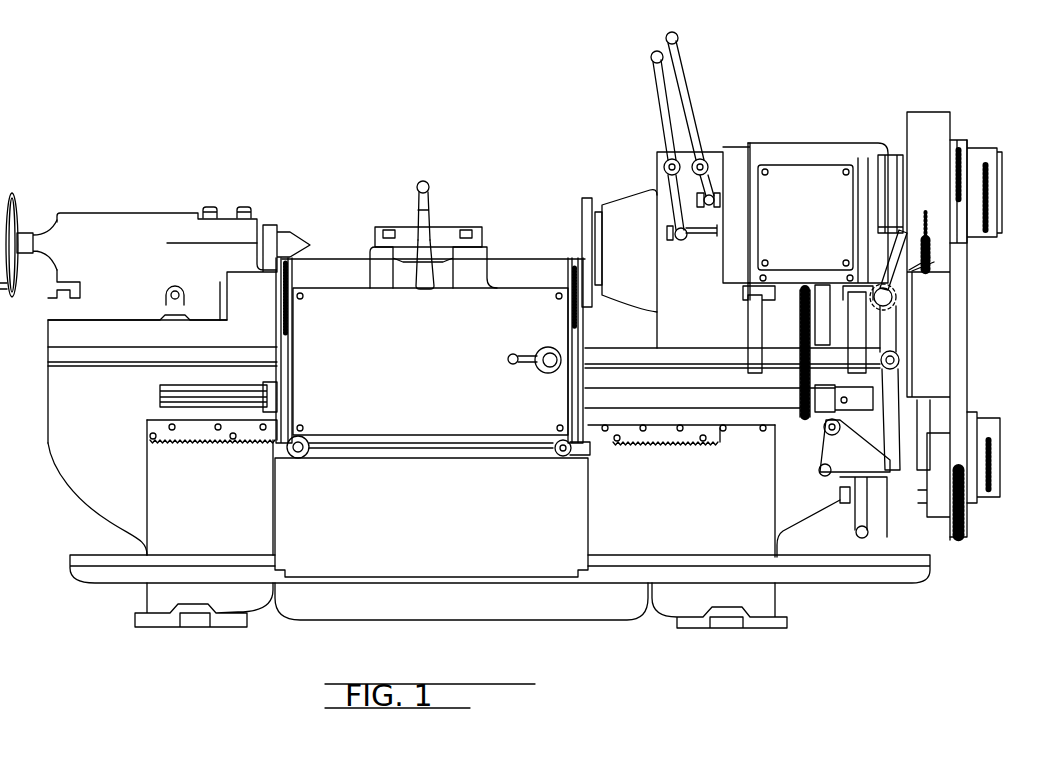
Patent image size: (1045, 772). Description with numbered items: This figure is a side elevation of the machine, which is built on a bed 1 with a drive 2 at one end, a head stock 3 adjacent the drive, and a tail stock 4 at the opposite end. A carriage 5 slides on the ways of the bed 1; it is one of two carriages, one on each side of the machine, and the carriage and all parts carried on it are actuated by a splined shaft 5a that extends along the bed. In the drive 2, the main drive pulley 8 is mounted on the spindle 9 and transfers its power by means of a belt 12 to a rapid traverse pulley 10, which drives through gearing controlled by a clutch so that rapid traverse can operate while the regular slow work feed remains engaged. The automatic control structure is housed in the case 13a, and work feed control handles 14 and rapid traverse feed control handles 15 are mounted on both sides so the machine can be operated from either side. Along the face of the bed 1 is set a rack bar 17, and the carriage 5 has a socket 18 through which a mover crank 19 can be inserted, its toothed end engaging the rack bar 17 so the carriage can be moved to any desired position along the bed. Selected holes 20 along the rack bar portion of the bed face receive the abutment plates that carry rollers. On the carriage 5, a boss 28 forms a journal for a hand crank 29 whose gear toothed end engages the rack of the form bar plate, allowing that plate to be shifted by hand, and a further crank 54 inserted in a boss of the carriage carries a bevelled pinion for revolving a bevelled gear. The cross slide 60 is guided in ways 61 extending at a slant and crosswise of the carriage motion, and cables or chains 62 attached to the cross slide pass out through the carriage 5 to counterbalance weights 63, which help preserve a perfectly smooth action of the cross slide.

The bed 1 is at (676, 518).
The drive 2 is at (965, 116).
The head stock 3 is at (608, 202).
The tail stock 4 is at (190, 222).
The carriage 5 is at (433, 353).
The splined shaft 5a is at (175, 392).
The main drive pulley 8 is at (935, 233).
The spindle 9 is at (905, 190).
The rapid traverse pulley 10 is at (977, 440).
The belt 12 is at (953, 342).
The case 13a is at (797, 200).
The work feed control handle 14 is at (658, 118).
The rapid traverse feed control handle 15 is at (692, 102).
The rack bar 17 is at (650, 437).
The socket 18 is at (309, 457).
The mover crank 19 is at (573, 457).
The holes 20 is at (218, 430).
The boss 28 is at (440, 277).
The hand crank 29 is at (448, 268).
The crank 54 is at (533, 352).
The cross slide 60 is at (481, 230).
The ways 61 is at (478, 260).
The cables or chains 62 is at (285, 320).
The counterbalance weight 63 is at (417, 520).